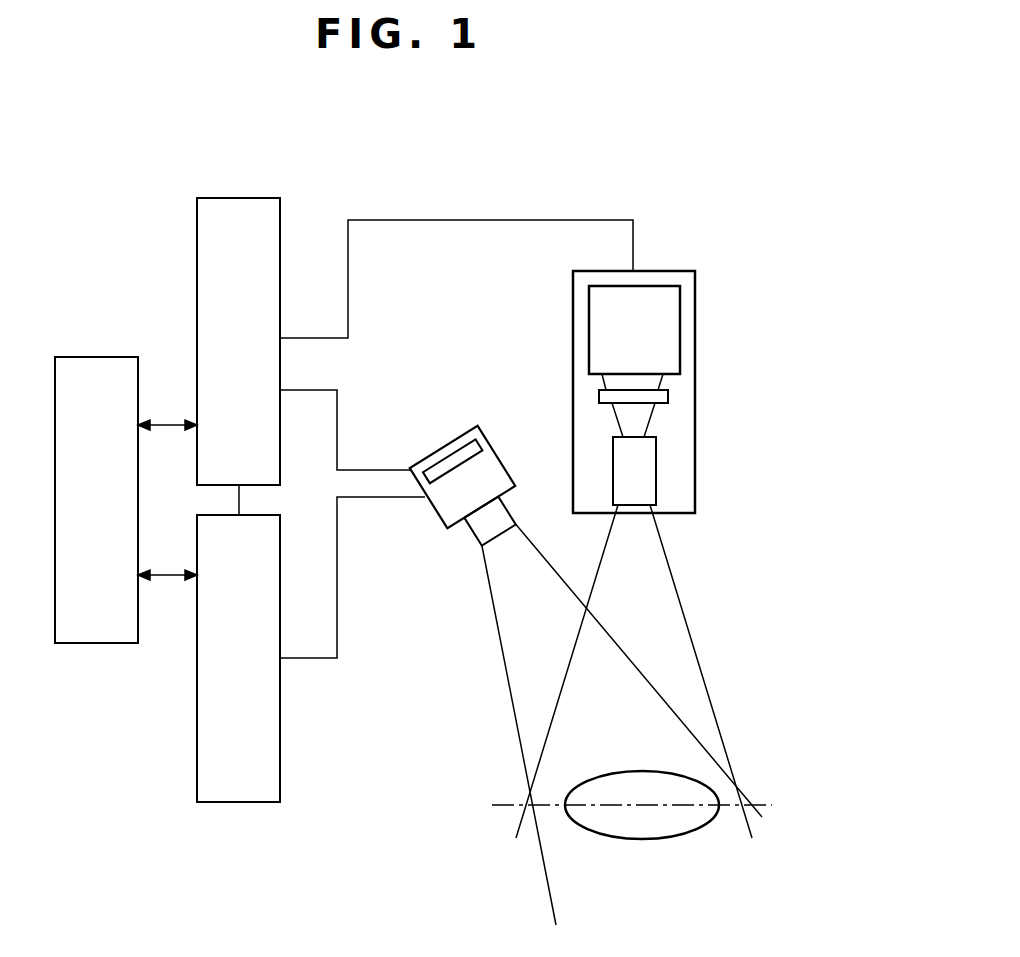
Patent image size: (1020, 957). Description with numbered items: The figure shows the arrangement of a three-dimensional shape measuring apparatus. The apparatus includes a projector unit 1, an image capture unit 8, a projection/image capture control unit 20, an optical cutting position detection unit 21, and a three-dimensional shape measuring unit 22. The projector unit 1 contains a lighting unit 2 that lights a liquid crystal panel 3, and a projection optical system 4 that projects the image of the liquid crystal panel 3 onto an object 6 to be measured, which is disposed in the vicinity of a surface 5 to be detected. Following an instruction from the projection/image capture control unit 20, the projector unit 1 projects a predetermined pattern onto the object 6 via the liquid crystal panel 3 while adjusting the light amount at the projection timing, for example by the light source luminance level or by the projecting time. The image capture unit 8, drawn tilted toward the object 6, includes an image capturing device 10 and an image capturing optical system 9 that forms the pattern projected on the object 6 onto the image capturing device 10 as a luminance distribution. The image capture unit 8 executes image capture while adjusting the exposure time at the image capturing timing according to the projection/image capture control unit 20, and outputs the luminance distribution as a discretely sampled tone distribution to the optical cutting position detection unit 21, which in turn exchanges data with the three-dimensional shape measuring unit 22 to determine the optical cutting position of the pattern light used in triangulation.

The projector unit 1 is at (695, 290).
The lighting unit 2 is at (680, 333).
The liquid crystal panel 3 is at (668, 394).
The projection optical system 4 is at (656, 459).
The surface to be detected 5 is at (492, 812).
The object to be measured 6 is at (664, 838).
The image capture unit 8 is at (436, 449).
The image capturing optical system 9 is at (470, 529).
The image capturing device 10 is at (463, 441).
The projection/image capture control unit 20 is at (239, 198).
The optical cutting position detection unit 21 is at (241, 802).
The three-dimensional shape measuring unit 22 is at (98, 357).